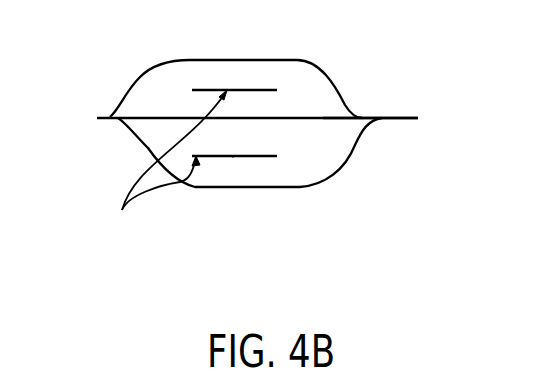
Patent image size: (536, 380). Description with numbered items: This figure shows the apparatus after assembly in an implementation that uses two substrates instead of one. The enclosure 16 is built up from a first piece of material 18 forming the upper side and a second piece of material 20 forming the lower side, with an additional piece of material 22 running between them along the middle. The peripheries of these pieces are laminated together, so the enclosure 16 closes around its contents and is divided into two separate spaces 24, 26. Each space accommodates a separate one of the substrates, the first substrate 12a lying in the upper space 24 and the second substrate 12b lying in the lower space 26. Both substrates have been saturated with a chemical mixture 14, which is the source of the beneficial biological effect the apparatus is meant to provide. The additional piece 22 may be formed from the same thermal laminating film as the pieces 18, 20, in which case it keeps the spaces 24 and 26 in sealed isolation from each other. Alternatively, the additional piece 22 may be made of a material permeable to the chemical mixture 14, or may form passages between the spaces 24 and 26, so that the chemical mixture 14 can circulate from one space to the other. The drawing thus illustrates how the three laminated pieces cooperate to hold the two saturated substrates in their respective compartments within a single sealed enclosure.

The substrate 12a is at (213, 89).
The substrate 12b is at (233, 157).
The chemical mixture 14 is at (171, 166).
The enclosure 16 is at (110, 117).
The first piece of material 18 is at (265, 60).
The second piece of material 20 is at (283, 187).
The additional piece of material 22 is at (323, 118).
The space 24 is at (313, 99).
The space 26 is at (313, 165).